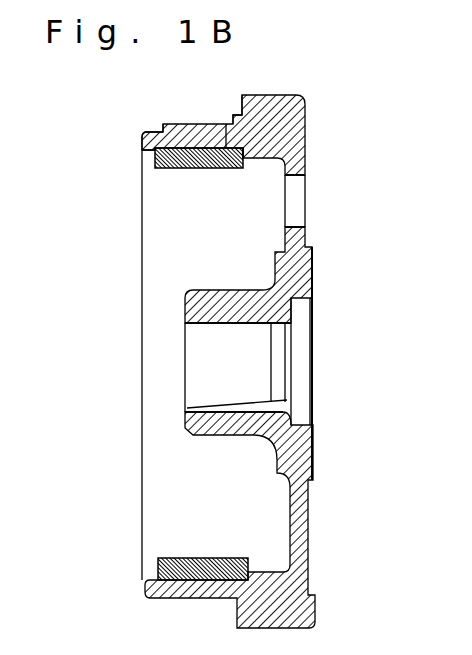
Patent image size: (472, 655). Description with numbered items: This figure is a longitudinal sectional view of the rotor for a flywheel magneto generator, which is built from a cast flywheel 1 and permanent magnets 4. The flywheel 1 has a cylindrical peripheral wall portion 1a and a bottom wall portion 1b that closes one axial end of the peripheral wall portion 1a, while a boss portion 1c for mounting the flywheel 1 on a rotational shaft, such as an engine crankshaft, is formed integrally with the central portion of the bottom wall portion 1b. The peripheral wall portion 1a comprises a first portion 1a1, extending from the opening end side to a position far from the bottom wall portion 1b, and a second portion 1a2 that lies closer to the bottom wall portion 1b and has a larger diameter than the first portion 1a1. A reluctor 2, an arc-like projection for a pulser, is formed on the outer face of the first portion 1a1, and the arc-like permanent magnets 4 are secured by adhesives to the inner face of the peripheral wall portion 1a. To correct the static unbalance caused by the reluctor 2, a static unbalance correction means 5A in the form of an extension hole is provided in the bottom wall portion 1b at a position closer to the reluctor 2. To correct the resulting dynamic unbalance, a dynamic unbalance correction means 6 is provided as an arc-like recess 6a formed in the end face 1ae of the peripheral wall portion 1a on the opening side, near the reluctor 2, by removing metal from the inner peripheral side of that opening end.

The flywheel 1 is at (233, 332).
The peripheral wall portion 1a is at (263, 106).
The first portion 1a1 is at (226, 133).
The second portion 1a2 is at (267, 110).
The bottom wall portion 1b is at (330, 182).
The boss portion 1c is at (187, 303).
The end face 1ae is at (145, 582).
The reluctor 2 is at (113, 322).
The permanent magnets 4 is at (152, 163).
The static unbalance correction means 5A is at (295, 204).
The dynamic unbalance correction means 6 is at (138, 145).
The recess 6a is at (140, 147).